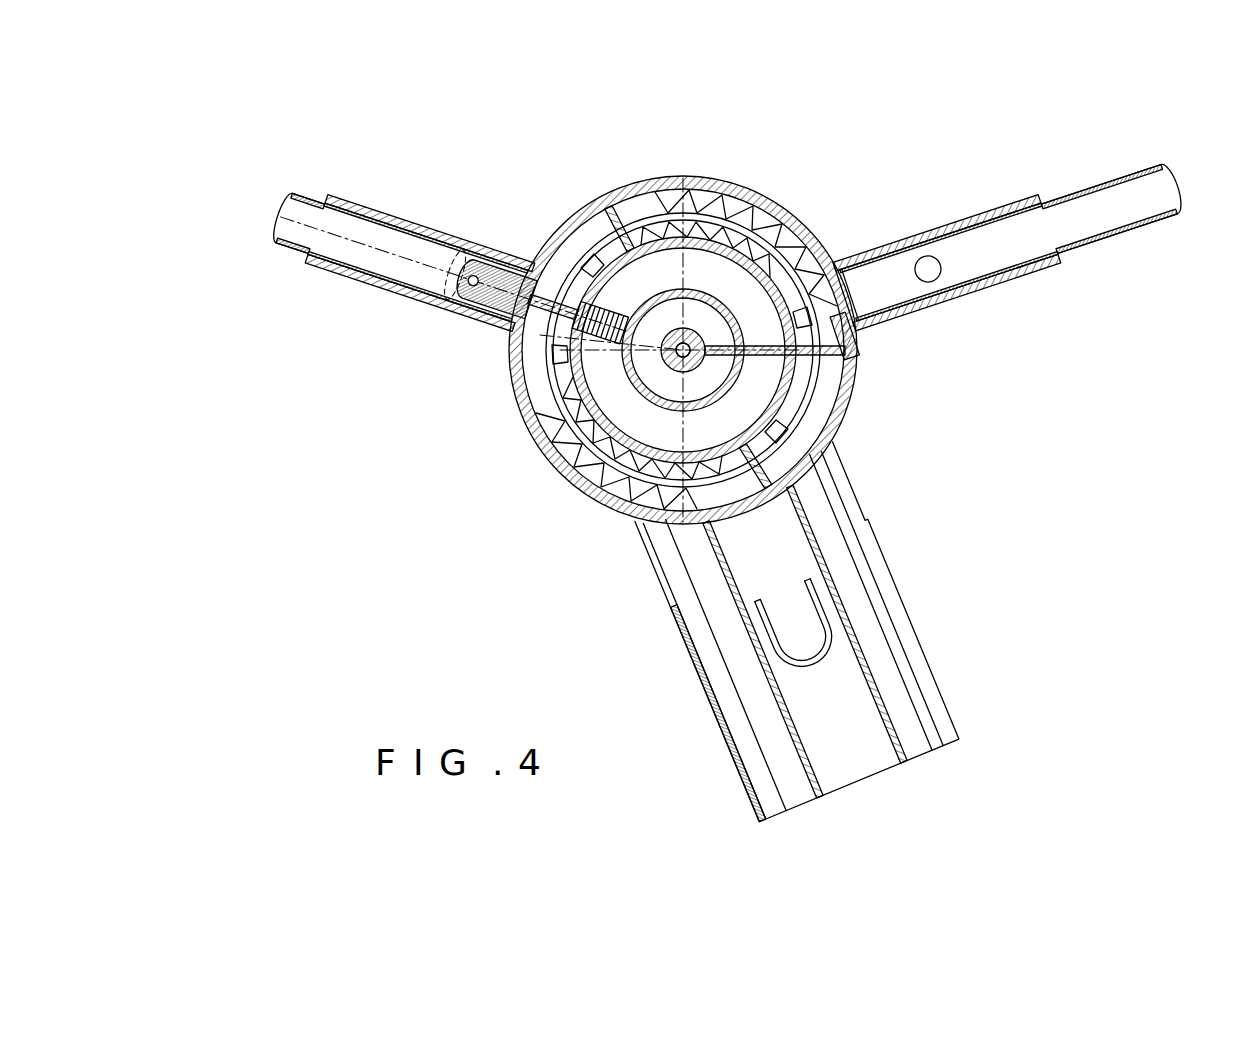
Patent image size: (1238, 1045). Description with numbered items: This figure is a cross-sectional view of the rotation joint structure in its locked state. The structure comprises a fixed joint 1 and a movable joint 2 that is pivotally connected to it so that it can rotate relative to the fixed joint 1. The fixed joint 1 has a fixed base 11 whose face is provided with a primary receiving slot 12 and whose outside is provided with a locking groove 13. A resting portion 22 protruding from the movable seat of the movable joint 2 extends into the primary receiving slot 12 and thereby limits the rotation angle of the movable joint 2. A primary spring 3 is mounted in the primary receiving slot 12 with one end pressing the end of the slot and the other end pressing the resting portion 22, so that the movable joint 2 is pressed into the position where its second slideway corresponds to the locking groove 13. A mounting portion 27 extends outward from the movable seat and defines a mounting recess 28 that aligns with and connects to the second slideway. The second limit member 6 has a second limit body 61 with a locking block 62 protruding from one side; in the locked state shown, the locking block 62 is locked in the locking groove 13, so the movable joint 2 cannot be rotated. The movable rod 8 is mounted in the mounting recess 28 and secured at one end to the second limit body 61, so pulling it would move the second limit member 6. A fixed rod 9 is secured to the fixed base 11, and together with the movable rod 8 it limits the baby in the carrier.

The fixed joint 1 is at (912, 182).
The movable joint 2 is at (1012, 395).
The primary spring 3 is at (718, 190).
The second limit member 6 is at (453, 207).
The movable rod 8 is at (287, 247).
The fixed rod 9 is at (1158, 222).
The fixed base 11 is at (817, 243).
The primary receiving slot 12 is at (793, 243).
The locking groove 13 is at (490, 330).
The resting portion 22 is at (848, 371).
The mounting portion 27 is at (360, 207).
The mounting recess 28 is at (407, 222).
The second limit body 61 is at (503, 250).
The locking block 62 is at (538, 290).